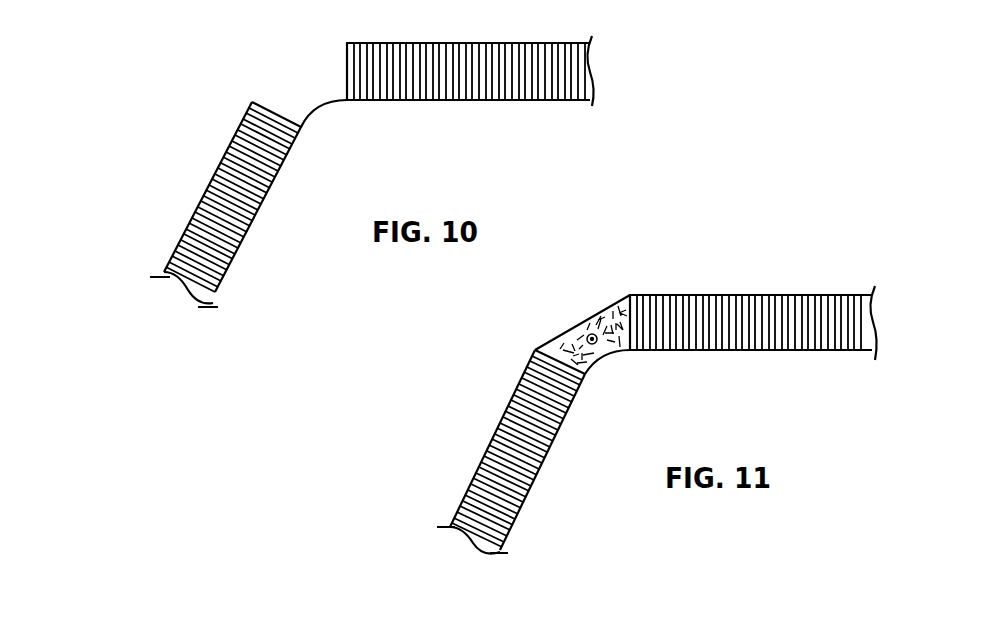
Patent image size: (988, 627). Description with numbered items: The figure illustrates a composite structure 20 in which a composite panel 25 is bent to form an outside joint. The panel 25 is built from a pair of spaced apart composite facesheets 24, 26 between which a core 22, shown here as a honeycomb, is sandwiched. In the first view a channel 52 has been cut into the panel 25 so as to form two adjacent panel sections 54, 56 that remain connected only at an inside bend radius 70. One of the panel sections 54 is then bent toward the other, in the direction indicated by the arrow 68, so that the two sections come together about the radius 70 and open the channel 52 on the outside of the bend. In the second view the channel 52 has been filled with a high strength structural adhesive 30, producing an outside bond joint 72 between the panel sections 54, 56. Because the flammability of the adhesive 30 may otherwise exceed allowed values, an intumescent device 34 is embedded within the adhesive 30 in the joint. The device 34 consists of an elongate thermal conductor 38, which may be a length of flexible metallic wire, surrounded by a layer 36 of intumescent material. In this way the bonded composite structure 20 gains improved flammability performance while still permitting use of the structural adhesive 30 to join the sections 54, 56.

In FIG. 10, the composite structure 20 is at (198, 63).
In FIG. 11, the composite structure 20 is at (747, 282).
In FIG. 10, the core 22 is at (250, 212).
In FIG. 11, the core 22 is at (513, 435).
In FIG. 10, the composite facesheet 24 is at (440, 43).
In FIG. 11, the composite facesheet 24 is at (655, 295).
In FIG. 10, the composite panel 25 is at (317, 53).
In FIG. 11, the composite panel 25 is at (480, 370).
In FIG. 10, the composite facesheet 26 is at (400, 100).
In FIG. 11, the composite facesheet 26 is at (547, 450).
In FIG. 11, the structural adhesive 30 is at (578, 330).
In FIG. 11, the intumescent device 34 is at (588, 322).
In FIG. 11, the layer of intumescent material 36 is at (582, 356).
In FIG. 11, the elongate thermal conductor 38 is at (610, 345).
In FIG. 10, the channel 52 is at (270, 80).
In FIG. 10, the panel section 54 is at (240, 262).
In FIG. 11, the panel section 54 is at (525, 508).
In FIG. 10, the panel section 56 is at (493, 105).
In FIG. 11, the panel section 56 is at (822, 372).
In FIG. 10, the arrow 68 is at (177, 195).
In FIG. 10, the inside radius 70 is at (326, 108).
In FIG. 11, the inside radius 70 is at (602, 362).
In FIG. 11, the outside bond joint 72 is at (535, 333).